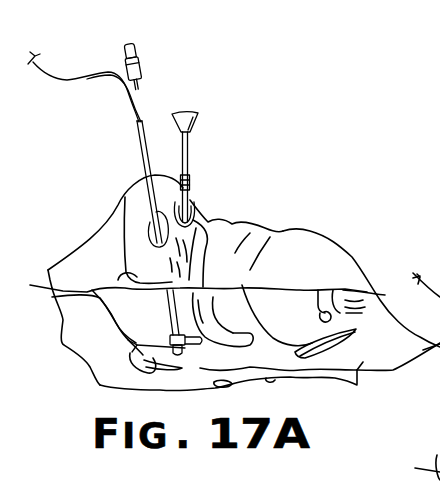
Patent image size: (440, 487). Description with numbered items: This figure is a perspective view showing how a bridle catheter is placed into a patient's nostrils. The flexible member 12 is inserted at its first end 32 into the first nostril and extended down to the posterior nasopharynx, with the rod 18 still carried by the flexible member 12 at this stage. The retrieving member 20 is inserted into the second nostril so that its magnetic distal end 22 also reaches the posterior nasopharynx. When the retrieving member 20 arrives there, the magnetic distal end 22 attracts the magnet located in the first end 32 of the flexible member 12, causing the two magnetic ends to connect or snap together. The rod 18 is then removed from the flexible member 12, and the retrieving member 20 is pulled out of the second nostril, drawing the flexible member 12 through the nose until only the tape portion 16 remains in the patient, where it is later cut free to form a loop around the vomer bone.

The flexible member 12 is at (140, 149).
The tape portion 16 is at (67, 79).
The rod 18 is at (140, 87).
The retrieving member 20 is at (190, 153).
The magnetic distal end 22 is at (187, 345).
The first end 32 is at (137, 345).